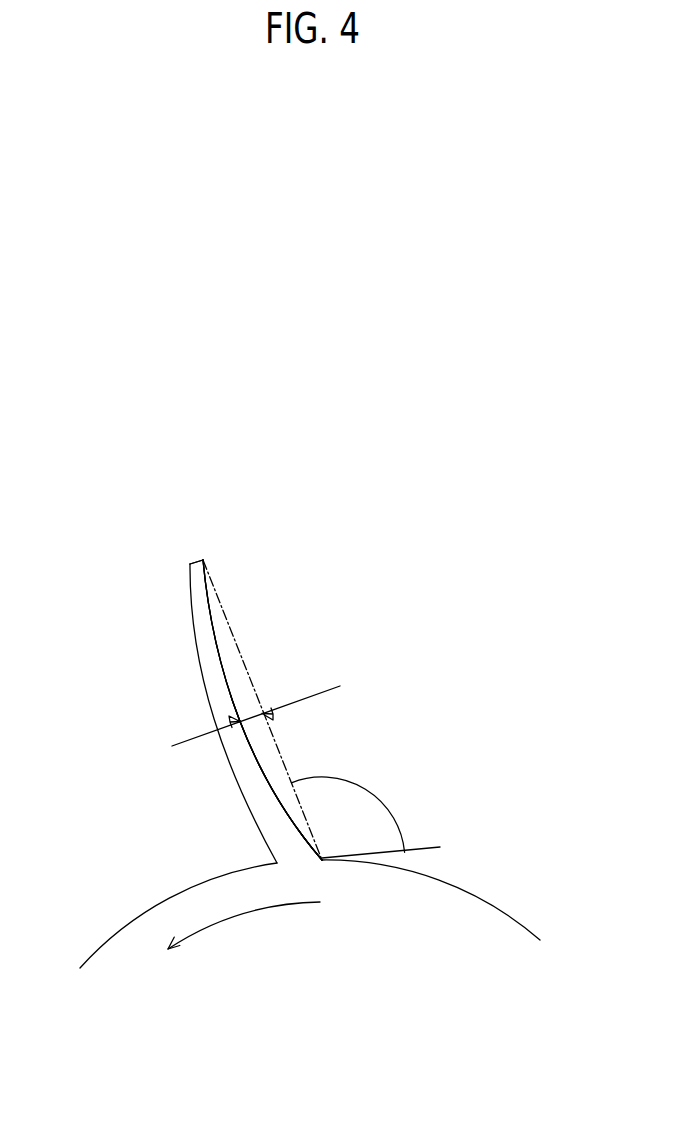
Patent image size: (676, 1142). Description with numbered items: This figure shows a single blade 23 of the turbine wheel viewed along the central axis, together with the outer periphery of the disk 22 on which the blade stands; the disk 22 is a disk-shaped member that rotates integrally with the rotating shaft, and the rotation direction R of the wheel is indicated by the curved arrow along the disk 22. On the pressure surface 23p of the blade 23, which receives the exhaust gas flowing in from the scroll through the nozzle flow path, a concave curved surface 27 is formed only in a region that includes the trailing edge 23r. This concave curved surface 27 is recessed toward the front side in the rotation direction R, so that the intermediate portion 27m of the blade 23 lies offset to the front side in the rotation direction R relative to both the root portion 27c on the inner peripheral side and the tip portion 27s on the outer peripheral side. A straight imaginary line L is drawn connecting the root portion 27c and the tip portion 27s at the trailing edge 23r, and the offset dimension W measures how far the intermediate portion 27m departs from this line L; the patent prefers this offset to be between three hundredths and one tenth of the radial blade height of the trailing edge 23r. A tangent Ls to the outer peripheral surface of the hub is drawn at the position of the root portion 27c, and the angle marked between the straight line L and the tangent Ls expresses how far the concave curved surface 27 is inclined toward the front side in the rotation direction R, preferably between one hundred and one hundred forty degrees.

The disk 22 is at (436, 879).
The blade 23 is at (197, 653).
The pressure surface 23p is at (217, 642).
The trailing edge 23r is at (261, 768).
The concave curved surface 27 is at (262, 710).
The tip portion 27s is at (203, 560).
The intermediate portion 27m is at (249, 708).
The root portion 27c is at (323, 857).
The straight line L is at (223, 612).
The tangent Ls is at (418, 847).
The offset dimension W is at (248, 716).
The rotation direction R is at (244, 929).